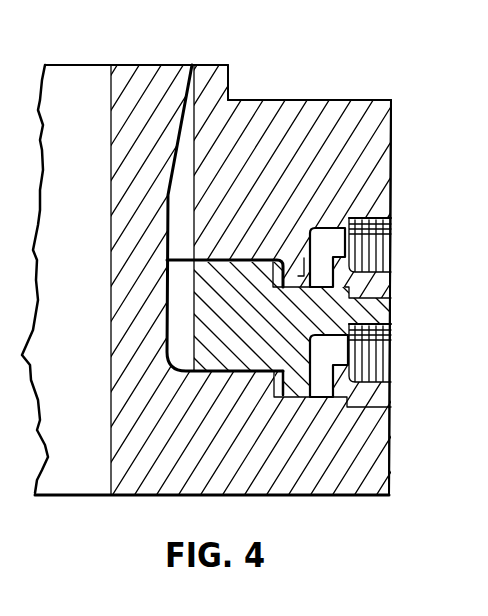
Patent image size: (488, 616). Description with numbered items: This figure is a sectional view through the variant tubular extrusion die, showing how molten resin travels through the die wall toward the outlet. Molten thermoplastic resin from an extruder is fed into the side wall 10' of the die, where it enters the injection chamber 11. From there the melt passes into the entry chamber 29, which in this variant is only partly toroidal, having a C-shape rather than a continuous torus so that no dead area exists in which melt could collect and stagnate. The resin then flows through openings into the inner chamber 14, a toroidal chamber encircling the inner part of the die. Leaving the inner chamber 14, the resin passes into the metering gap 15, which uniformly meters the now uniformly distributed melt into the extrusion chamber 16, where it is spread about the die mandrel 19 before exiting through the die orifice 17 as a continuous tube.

The die mandrel 19 is at (147, 80).
The die orifice 17 is at (194, 72).
The extrusion chamber 16 is at (192, 124).
The side wall 10' is at (426, 297).
The injection chamber 11 is at (393, 223).
The entry chamber 29 is at (320, 232).
The inner chamber 14 is at (281, 257).
The metering gap 15 is at (227, 258).